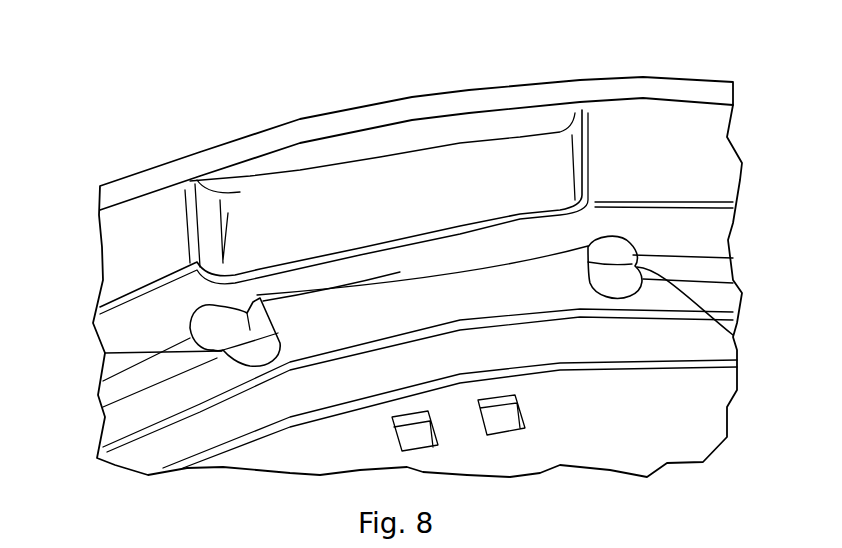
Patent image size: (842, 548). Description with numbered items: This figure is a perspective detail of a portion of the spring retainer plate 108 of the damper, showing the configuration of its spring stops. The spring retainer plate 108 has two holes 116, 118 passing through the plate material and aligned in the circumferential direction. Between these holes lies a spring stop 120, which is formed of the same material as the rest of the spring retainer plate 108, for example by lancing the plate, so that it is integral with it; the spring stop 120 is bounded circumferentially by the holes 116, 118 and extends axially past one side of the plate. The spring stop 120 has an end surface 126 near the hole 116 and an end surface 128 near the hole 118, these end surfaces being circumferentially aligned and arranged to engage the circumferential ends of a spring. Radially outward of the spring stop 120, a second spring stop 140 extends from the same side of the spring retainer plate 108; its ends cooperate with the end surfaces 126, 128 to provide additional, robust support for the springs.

The spring retainer plate 108 is at (713, 53).
The spring stop 140 is at (230, 186).
The spring stop 120 is at (369, 258).
The hole 116 is at (215, 332).
The end surface 128 is at (617, 287).
The hole 118 is at (735, 336).
The end surface 126 is at (105, 353).